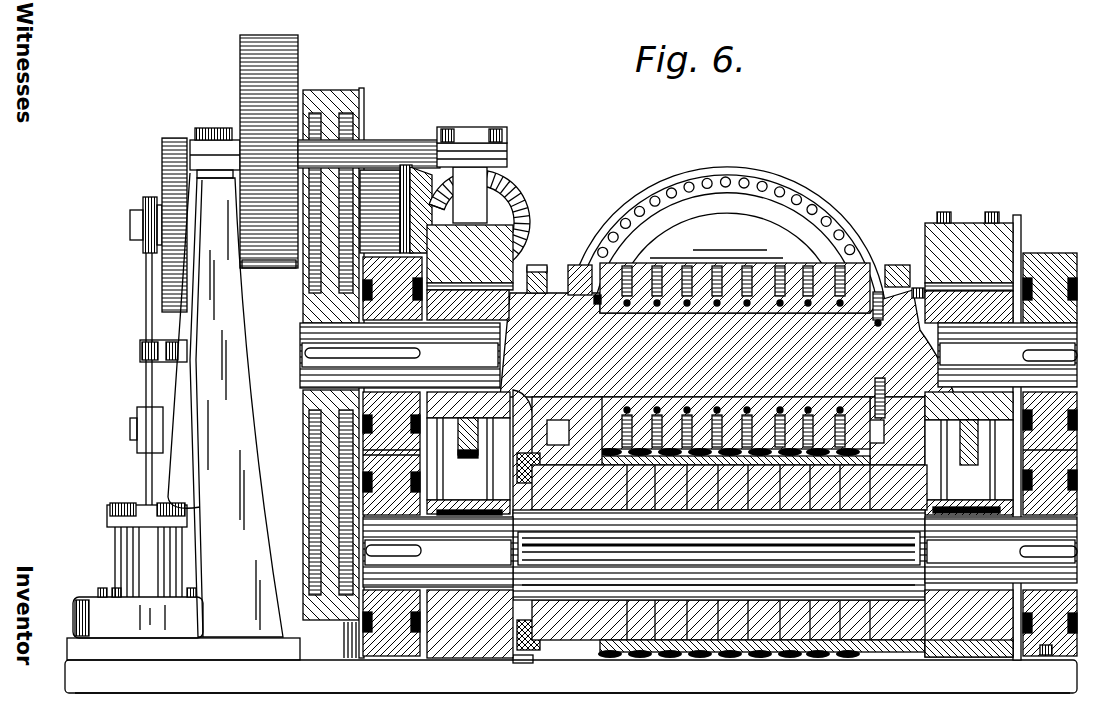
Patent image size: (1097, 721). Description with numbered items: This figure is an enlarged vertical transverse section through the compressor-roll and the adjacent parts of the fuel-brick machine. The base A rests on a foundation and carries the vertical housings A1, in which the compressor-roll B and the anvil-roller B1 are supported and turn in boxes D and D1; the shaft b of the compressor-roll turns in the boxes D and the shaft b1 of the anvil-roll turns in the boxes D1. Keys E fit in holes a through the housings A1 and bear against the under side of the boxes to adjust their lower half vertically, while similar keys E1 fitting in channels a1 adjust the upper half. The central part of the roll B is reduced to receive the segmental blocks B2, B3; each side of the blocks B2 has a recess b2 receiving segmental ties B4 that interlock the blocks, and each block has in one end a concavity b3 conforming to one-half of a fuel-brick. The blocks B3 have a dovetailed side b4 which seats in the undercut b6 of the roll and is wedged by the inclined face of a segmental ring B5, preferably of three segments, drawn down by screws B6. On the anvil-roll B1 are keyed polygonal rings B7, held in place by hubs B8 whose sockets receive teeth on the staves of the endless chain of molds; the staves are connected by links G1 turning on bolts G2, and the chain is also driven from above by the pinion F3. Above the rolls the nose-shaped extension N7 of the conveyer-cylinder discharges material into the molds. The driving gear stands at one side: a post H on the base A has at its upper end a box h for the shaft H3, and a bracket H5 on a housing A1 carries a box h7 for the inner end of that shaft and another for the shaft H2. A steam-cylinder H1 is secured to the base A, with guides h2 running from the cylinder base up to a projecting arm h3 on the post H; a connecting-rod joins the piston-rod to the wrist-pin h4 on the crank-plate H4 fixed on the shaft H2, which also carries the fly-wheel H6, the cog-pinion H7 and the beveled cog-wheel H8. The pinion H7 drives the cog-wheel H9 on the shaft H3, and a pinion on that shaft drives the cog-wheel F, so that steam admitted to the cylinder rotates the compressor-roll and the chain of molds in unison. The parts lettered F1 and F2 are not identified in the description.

The base A is at (571, 665).
The steam-cylinder H1 is at (118, 547).
The guides h2 is at (148, 483).
The projecting arm h3 is at (140, 352).
The wrist-pin h4 is at (128, 222).
The crank-plate H4 is at (163, 160).
The box h is at (205, 120).
The cog-wheel H9 is at (273, 52).
The cog-pinion H7 is at (258, 270).
The post H is at (225, 405).
The cog-wheel F is at (358, 112).
The shaft H3 is at (375, 142).
The shaft H2 is at (395, 215).
The fly-wheel H6 is at (392, 243).
The beveled cog-wheel H8 is at (432, 180).
The bracket H5 is at (486, 196).
The box h7 is at (486, 128).
The nose-shaped extension N7 is at (726, 235).
The compressor-roll B is at (513, 280).
The segmental blocks B2 is at (736, 264).
The segmental ties B4 is at (662, 340).
The segmental blocks B3 is at (600, 262).
The screws B6 is at (895, 263).
The keys E1 is at (1034, 247).
The pinion F3 is at (580, 274).
The vertical housings A1 is at (720, 251).
The channels a1 is at (720, 306).
The frame block F1 is at (720, 288).
The shaft b is at (688, 355).
The undercut b6 is at (510, 340).
The dovetailed form b4 is at (533, 350).
The recess b2 is at (560, 355).
The segmental ring B5 is at (892, 355).
The boxes D is at (720, 439).
The concavity b3 is at (567, 438).
The frame block F2 is at (720, 453).
The keys E is at (720, 466).
The holes a is at (481, 458).
The bolts G2 is at (522, 668).
The links G1 is at (718, 623).
The polygonal rings B7 is at (620, 515).
The hubs B8 is at (719, 554).
The anvil-roller B1 is at (718, 573).
The shaft b1 is at (720, 552).
The boxes D1 is at (720, 624).